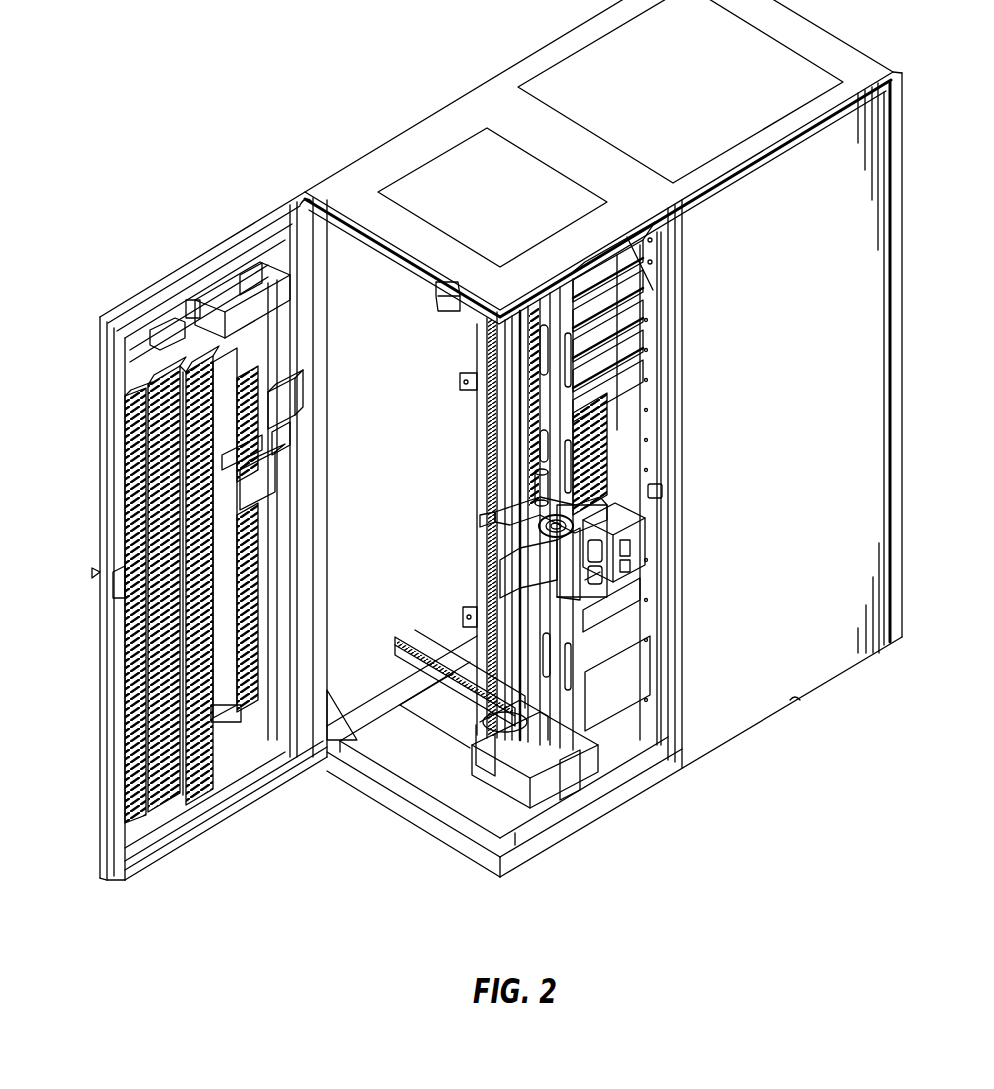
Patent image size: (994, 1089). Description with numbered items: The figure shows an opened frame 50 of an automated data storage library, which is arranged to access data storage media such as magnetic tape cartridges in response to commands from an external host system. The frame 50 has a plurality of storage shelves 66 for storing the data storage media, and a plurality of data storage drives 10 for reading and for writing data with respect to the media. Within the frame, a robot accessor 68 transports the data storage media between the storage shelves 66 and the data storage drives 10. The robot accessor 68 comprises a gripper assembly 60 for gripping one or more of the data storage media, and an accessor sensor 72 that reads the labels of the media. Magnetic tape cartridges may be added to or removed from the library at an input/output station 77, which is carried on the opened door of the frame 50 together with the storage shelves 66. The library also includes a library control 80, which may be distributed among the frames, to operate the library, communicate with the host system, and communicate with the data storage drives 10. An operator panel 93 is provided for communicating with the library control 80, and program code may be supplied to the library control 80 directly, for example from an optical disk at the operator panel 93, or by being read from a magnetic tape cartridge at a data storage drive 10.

The frame 50 is at (497, 440).
The data storage drive 10 is at (628, 308).
The gripper assembly 60 is at (640, 543).
The storage shelves 66 is at (492, 443).
The robot accessor 68 is at (530, 757).
The accessor sensor 72 is at (520, 577).
The input/output station 77 is at (222, 458).
The library control 80 is at (287, 407).
The operator panel 93 is at (278, 318).